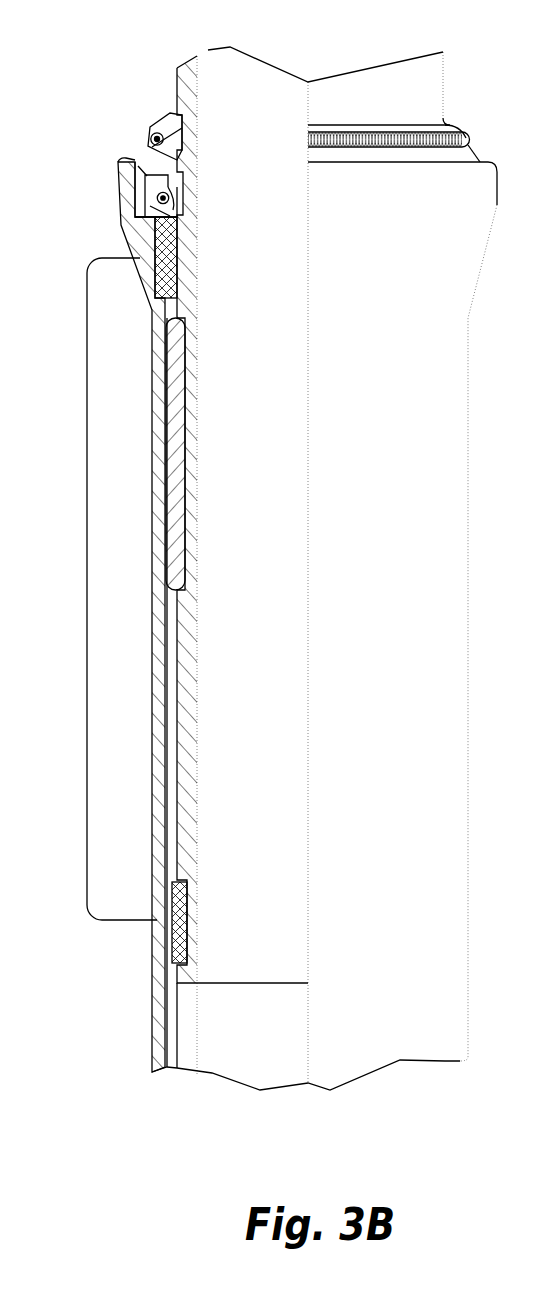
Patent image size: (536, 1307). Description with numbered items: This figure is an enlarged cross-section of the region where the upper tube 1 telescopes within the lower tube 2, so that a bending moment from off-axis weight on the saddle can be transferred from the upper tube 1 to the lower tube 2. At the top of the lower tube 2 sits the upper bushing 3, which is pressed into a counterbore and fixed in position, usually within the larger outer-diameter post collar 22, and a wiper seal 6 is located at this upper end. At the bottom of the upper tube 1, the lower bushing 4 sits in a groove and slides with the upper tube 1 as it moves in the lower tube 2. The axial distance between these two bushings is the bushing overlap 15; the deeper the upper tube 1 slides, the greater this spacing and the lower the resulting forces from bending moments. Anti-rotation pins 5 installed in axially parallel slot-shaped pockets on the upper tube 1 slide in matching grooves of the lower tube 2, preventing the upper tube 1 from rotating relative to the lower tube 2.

The upper tube 1 is at (174, 84).
The lower tube 2 is at (151, 1022).
The upper bushing 3 is at (147, 252).
The lower bushing 4 is at (162, 931).
The anti-rotation pins 5 is at (165, 462).
The wiper seal 6 is at (148, 127).
The bushing overlap 15 is at (87, 605).
The post collar 22 is at (119, 177).